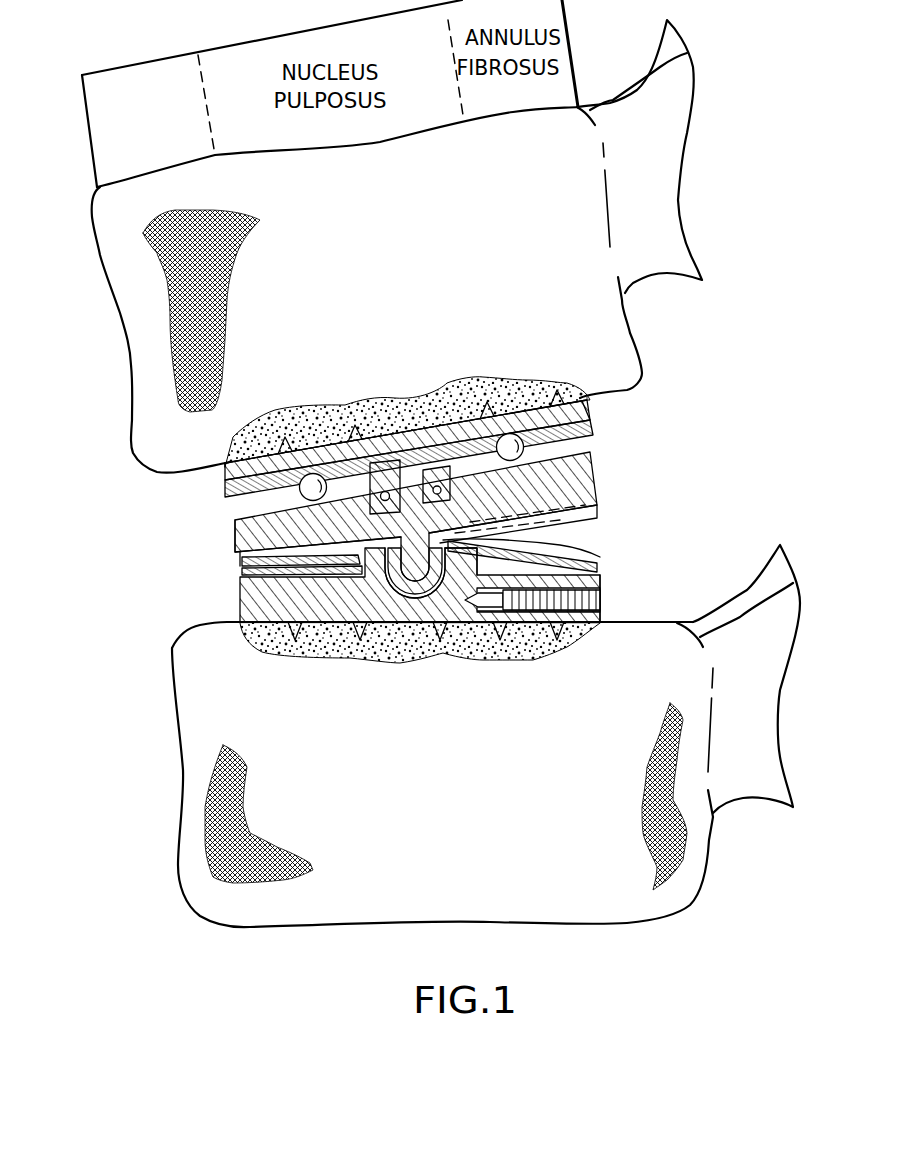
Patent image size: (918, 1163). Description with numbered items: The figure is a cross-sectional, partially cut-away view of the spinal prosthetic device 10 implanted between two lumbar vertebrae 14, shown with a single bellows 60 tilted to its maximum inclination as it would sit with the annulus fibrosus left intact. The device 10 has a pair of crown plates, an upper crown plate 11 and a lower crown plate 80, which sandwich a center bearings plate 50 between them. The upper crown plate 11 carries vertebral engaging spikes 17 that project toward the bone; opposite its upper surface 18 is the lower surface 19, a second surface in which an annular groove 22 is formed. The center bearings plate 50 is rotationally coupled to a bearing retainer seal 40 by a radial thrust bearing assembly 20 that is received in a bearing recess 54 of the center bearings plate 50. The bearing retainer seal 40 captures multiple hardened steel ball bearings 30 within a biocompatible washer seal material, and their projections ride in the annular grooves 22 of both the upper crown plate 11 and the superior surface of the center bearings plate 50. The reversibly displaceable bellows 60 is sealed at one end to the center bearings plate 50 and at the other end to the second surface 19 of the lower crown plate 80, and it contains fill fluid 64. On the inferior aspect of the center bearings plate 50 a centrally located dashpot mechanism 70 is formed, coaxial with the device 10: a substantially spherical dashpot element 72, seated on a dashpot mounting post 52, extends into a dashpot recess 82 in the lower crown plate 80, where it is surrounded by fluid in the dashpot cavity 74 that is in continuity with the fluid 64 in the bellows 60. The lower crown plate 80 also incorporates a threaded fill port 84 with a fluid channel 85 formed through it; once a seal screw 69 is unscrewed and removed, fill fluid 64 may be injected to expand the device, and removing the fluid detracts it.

The spinal prosthetic device 10 is at (379, 521).
The upper crown plate 11 is at (545, 407).
The vertebrae 14 is at (394, 257).
The spikes 17 is at (520, 398).
The upper surface 18 is at (482, 417).
The lower surface 19 is at (275, 458).
The radial thrust bearing assembly 20 is at (362, 510).
The annular groove 22 is at (597, 425).
The ball bearings 30 is at (312, 474).
The bearing retainer seal 40 is at (575, 446).
The center bearings plate 50 is at (598, 480).
The dashpot mounting post 52 is at (592, 561).
The bearing recess 54 is at (385, 462).
The bellows 60 is at (555, 527).
The fill fluid 64 is at (590, 518).
The seal screw 69 is at (604, 599).
The dashpot mechanism 70 is at (290, 557).
The spherical dashpot element 72 is at (462, 603).
The dashpot cavity 74 is at (405, 593).
The lower crown plate 80 is at (240, 610).
The dashpot recess 82 is at (430, 600).
The threaded fill port 84 is at (602, 626).
The fluid channel 85 is at (490, 600).